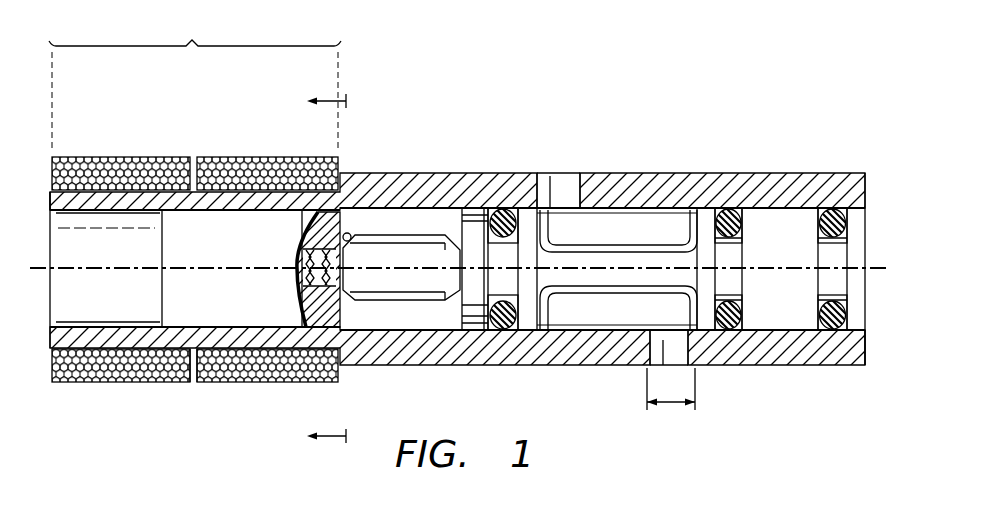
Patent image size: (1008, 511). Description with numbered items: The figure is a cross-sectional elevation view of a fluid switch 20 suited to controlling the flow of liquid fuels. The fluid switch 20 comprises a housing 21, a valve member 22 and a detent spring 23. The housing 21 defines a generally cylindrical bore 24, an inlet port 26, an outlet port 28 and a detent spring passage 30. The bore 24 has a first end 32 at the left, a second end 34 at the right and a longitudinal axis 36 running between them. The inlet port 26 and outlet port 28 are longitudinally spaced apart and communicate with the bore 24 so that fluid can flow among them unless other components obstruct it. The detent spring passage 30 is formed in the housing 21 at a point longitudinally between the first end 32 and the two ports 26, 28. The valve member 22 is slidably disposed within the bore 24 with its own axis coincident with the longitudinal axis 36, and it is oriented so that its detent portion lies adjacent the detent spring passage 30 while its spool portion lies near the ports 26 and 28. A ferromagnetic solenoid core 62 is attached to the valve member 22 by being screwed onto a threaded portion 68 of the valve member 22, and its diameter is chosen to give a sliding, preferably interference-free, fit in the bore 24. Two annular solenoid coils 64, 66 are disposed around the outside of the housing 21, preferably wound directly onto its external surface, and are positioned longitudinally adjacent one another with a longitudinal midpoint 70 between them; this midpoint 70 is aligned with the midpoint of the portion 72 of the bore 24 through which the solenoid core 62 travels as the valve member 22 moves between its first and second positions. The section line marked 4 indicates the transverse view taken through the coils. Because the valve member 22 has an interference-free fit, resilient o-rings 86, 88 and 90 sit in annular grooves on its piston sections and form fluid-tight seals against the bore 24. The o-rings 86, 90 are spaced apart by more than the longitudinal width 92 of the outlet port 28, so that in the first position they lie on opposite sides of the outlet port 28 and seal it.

The fluid switch 20 is at (661, 119).
The housing 21 is at (795, 173).
The valve member 22 is at (590, 320).
The detent spring 23 is at (355, 238).
The bore 24 is at (55, 217).
The inlet port 26 is at (572, 173).
The outlet port 28 is at (686, 366).
The detent spring passage 30 is at (348, 232).
The first end 32 is at (40, 344).
The second end 34 is at (882, 345).
The longitudinal axis 36 is at (872, 268).
The solenoid core 62 is at (162, 258).
The solenoid coil 64 is at (95, 157).
The solenoid coil 66 is at (233, 157).
The threaded portion 68 is at (300, 242).
The longitudinal midpoint 70 is at (195, 403).
The portion of bore 72 is at (195, 79).
The o-ring 86 is at (838, 332).
The o-ring 88 is at (511, 332).
The o-ring 90 is at (730, 208).
The longitudinal width 92 is at (671, 404).
The section line 4- 4 is at (317, 268).